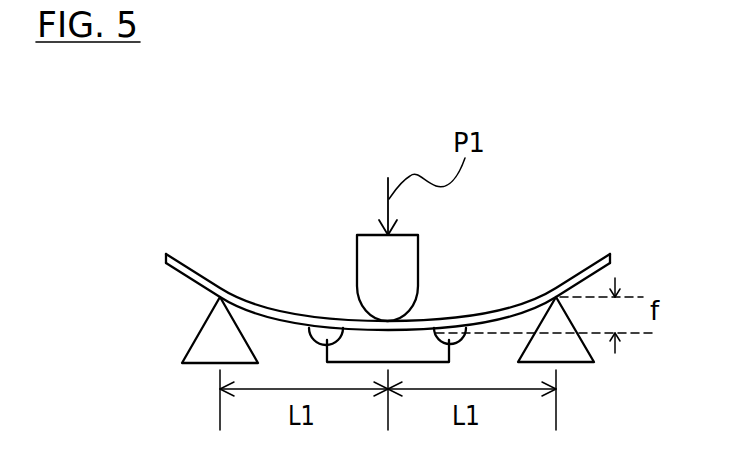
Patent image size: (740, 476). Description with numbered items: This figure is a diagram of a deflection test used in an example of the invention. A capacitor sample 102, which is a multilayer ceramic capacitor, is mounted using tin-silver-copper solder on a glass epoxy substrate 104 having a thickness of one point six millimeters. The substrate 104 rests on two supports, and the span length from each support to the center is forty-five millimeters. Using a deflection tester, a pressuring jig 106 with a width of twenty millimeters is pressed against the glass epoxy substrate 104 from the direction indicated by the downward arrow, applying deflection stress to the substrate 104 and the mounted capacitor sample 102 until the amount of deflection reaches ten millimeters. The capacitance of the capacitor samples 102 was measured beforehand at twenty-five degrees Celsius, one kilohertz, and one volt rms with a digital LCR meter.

The capacitor sample 102 is at (352, 342).
The glass epoxy substrate 104 is at (591, 274).
The pressuring jig 106 is at (400, 272).